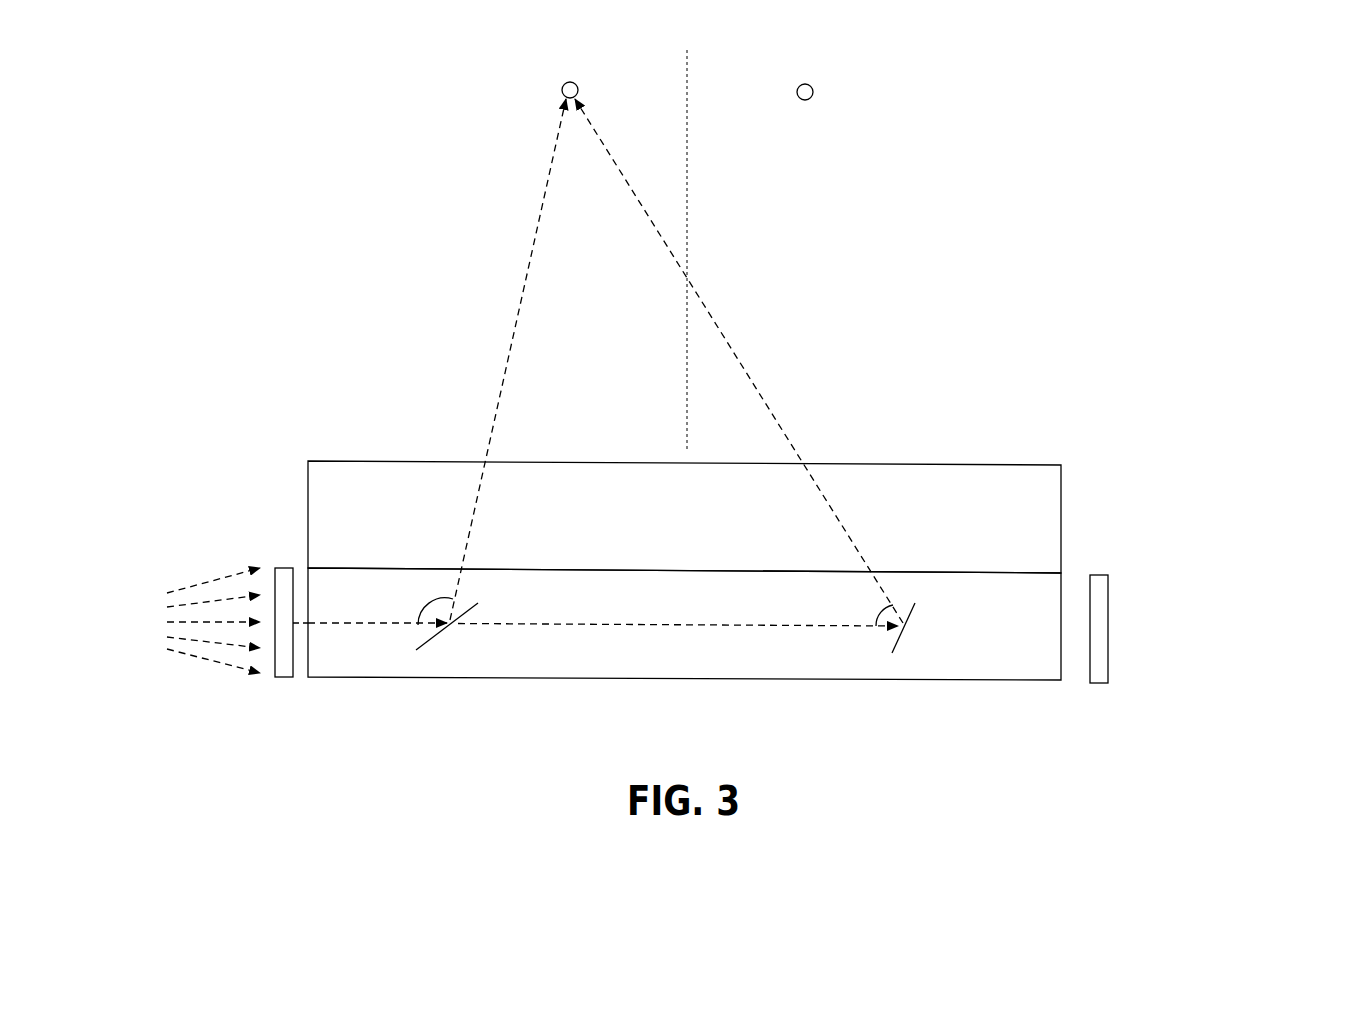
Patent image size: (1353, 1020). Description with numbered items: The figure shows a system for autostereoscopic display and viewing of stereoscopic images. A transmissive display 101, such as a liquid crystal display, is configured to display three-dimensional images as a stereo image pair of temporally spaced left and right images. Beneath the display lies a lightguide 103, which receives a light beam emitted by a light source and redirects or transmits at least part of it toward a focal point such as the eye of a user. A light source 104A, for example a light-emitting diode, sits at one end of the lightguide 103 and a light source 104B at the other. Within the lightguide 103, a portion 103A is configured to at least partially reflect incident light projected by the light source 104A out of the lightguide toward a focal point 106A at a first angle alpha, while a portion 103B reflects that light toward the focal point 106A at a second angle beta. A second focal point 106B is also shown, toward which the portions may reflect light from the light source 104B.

The transmissive display 101 is at (982, 493).
The lightguide 103 is at (967, 672).
The portion of the lightguide 103A is at (467, 657).
The portion of the lightguide 103B is at (872, 659).
The light source 104A is at (166, 622).
The light source 104B is at (1216, 629).
The focal point 106A is at (676, 340).
The focal point 106B is at (804, 80).